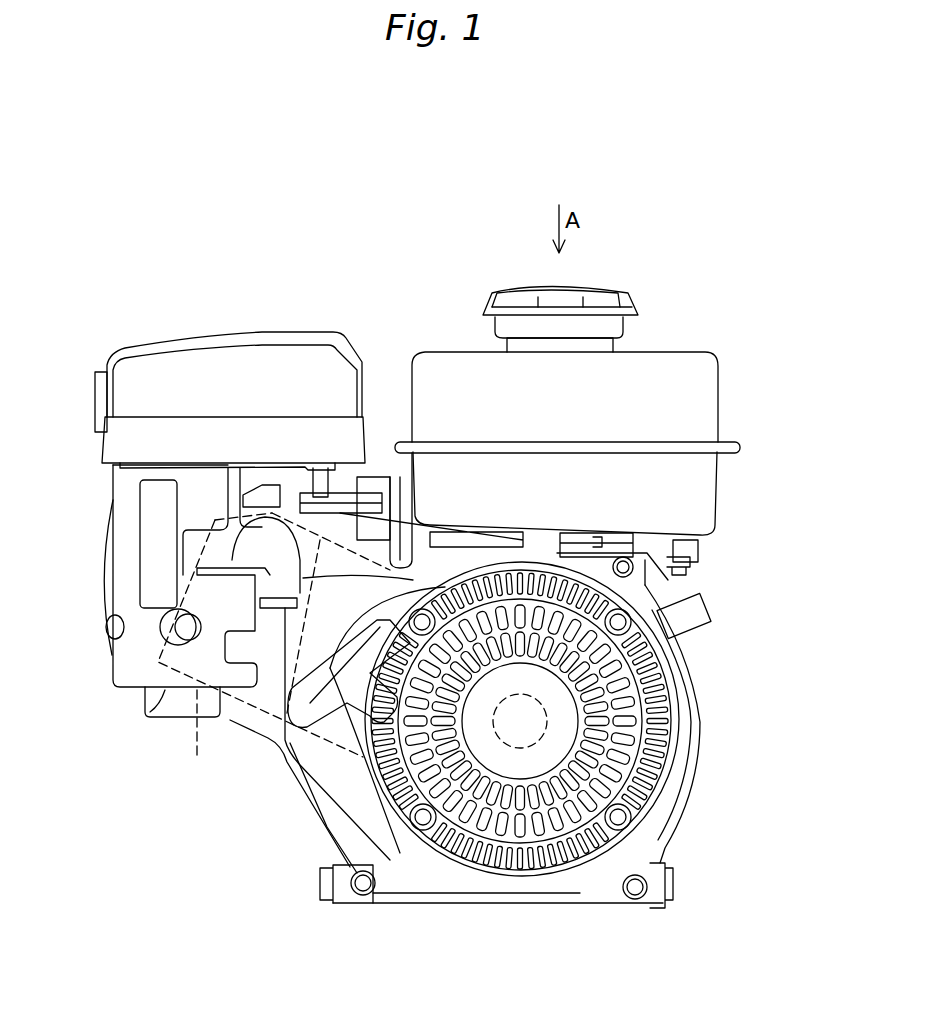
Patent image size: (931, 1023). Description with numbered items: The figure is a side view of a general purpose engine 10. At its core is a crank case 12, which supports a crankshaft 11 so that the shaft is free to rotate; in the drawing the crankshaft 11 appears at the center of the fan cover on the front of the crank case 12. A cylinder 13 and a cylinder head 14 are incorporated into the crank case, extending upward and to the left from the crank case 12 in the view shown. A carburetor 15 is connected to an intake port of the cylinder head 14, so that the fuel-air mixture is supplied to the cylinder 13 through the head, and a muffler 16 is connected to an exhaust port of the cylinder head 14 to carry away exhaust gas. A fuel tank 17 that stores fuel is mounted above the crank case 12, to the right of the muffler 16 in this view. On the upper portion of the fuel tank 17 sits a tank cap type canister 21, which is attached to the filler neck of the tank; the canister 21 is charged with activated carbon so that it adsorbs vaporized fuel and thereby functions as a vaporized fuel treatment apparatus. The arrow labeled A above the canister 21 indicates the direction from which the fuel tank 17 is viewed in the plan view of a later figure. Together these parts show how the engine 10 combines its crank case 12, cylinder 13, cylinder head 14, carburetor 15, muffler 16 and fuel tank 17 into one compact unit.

The general purpose engine 10 is at (197, 214).
The crankshaft 11 is at (655, 780).
The crank case 12 is at (700, 697).
The cylinder 13 is at (300, 737).
The cylinder head 14 is at (205, 718).
The carburetor 15 is at (158, 706).
The muffler 16 is at (155, 346).
The fuel tank 17 is at (680, 356).
The tank cap type canister 21 is at (607, 288).